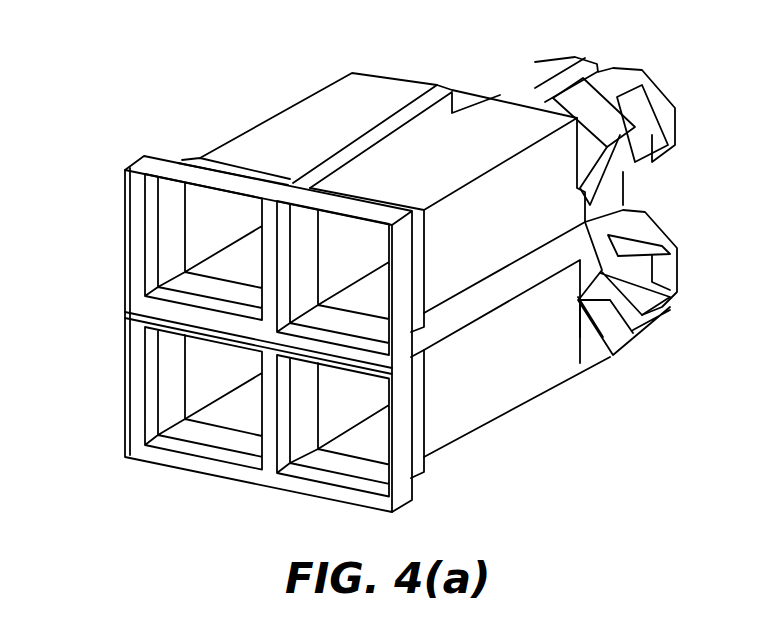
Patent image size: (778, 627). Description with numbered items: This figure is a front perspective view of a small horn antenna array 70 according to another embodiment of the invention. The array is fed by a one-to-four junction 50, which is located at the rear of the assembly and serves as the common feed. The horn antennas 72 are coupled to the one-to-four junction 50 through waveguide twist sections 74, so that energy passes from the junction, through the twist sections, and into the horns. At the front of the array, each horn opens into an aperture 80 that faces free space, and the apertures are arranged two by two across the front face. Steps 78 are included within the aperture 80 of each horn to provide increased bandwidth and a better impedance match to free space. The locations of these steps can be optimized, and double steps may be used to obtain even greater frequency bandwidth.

The horn antenna array 70 is at (391, 276).
The horn antennas 72 is at (323, 113).
The steps 78 is at (188, 235).
The aperture 80 is at (174, 398).
The one-to-four junction 50 is at (682, 72).
The waveguide twist sections 74 is at (678, 312).